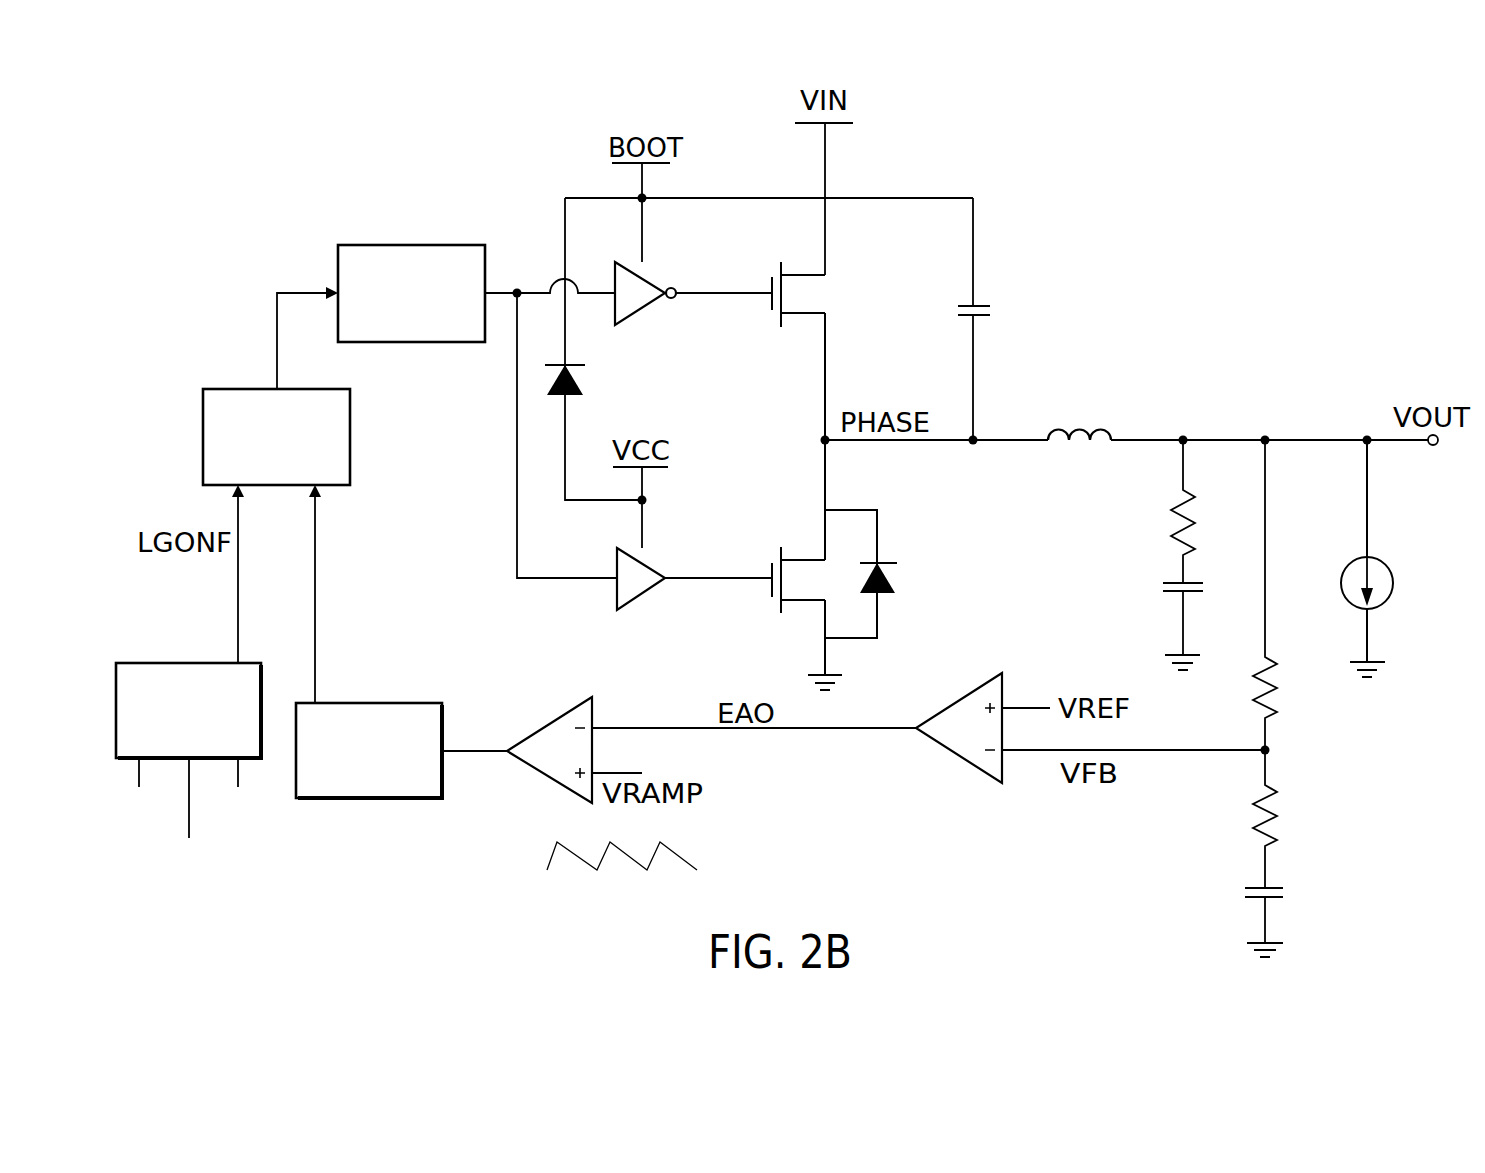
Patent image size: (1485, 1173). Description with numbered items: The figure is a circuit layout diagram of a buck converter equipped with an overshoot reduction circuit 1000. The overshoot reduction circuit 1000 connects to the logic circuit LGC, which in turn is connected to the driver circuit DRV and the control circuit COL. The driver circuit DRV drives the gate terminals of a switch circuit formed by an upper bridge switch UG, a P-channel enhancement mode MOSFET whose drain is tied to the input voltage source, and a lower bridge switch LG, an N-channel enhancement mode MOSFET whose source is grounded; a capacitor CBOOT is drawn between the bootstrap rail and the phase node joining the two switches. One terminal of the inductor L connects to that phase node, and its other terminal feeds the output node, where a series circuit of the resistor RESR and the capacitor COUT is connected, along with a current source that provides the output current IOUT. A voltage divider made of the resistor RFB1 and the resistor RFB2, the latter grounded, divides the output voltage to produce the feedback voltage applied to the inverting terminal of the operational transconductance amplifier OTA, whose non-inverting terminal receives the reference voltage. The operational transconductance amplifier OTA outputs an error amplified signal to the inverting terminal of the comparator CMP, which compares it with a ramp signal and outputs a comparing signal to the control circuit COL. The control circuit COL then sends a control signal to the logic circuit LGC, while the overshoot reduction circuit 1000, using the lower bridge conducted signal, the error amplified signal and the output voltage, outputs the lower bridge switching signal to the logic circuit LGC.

The overshoot reduction circuit 1000 is at (157, 663).
The driver circuit DRV is at (412, 245).
The logic circuit LGC is at (235, 389).
The control circuit COL is at (365, 703).
The upper bridge switch UG is at (807, 351).
The lower bridge switch LG is at (834, 565).
The inductor L is at (1079, 419).
The capacitor CBOOT is at (1014, 319).
The resistor RESR is at (1151, 511).
The capacitor COUT is at (1151, 618).
The output current IOUT is at (1400, 558).
The resistor RFB1 is at (1294, 595).
The resistor RFB2 is at (1291, 852).
The operational transconductance amplifier OTA is at (1090, 728).
The comparator CMP is at (679, 750).